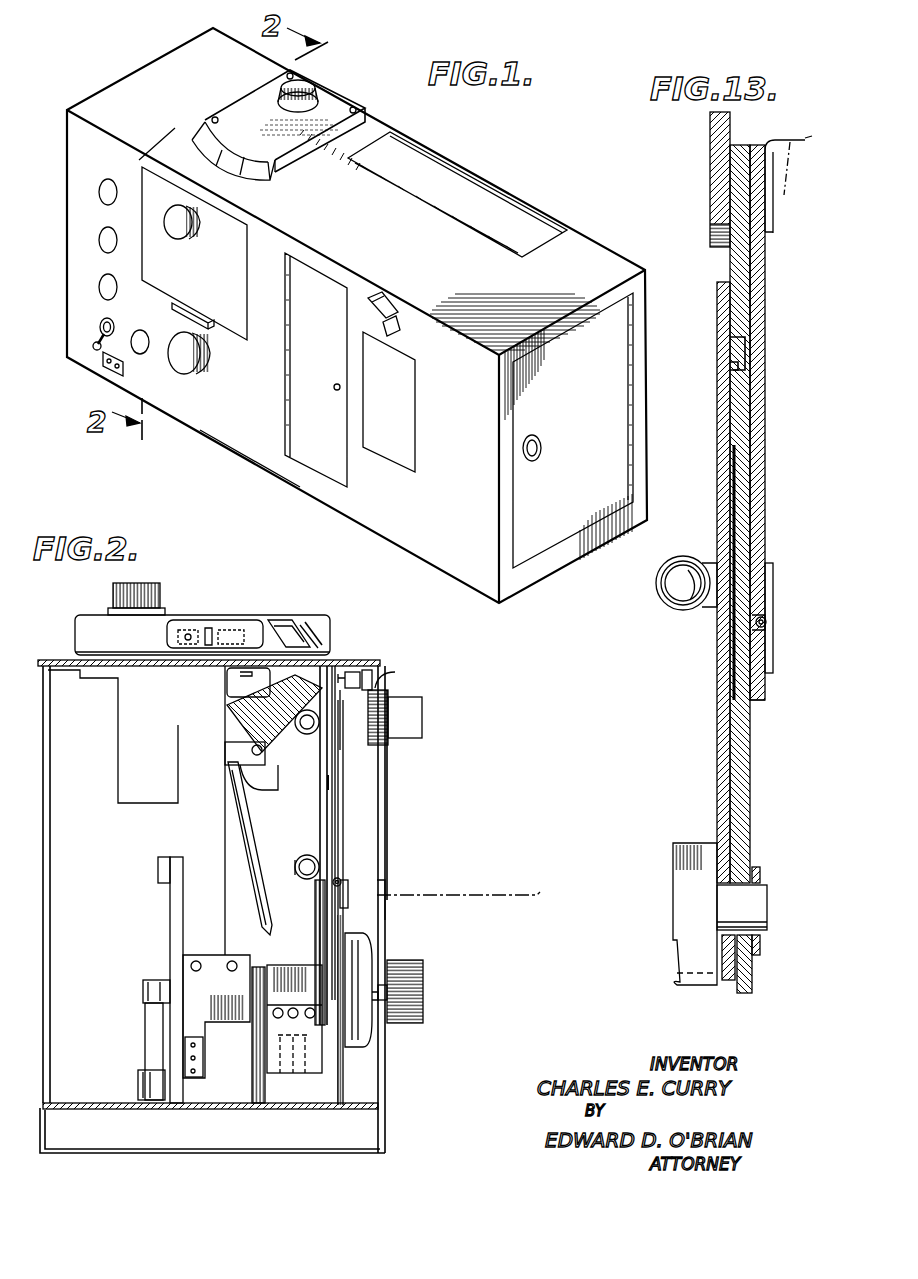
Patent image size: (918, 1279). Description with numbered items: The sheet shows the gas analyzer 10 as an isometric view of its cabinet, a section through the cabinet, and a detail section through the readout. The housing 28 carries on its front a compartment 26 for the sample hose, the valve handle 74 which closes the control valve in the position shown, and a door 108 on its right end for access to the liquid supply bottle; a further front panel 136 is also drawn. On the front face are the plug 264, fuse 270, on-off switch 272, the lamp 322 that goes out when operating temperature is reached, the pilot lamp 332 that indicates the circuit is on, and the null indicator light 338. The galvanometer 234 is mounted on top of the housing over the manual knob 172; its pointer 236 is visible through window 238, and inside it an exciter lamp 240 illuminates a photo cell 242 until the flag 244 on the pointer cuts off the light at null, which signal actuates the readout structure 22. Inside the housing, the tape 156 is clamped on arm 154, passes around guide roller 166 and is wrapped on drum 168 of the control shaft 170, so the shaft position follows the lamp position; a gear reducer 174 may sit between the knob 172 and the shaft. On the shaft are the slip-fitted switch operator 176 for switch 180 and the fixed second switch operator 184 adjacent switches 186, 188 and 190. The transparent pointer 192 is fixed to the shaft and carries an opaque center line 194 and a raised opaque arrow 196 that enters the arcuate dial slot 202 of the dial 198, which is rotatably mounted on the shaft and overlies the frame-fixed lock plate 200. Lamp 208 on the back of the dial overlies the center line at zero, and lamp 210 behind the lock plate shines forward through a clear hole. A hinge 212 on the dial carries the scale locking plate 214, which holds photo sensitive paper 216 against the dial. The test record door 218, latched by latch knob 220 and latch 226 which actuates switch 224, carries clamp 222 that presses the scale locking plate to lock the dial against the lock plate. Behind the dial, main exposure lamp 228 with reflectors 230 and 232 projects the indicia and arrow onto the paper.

In FIG. 1, the gas analyzer 10 is at (505, 190).
In FIG. 2, the readout structure 22 is at (345, 818).
In FIG. 1, the compartment 26 is at (303, 458).
In FIG. 1, the housing 28 is at (400, 521).
In FIG. 2, the housing 28 is at (388, 1082).
In FIG. 1, the valve handle 74 is at (400, 348).
In FIG. 1, the door 108 is at (533, 570).
In FIG. 1, the front access panel 136 is at (390, 448).
In FIG. 2, the arm 154 is at (158, 870).
In FIG. 2, the tape 156 is at (150, 1037).
In FIG. 2, the guide roller 166 is at (143, 1082).
In FIG. 2, the drum 168 is at (143, 992).
In FIG. 13, the control shaft 170 is at (745, 898).
In FIG. 2, the control shaft 170 is at (376, 1000).
In FIG. 1, the manual knob 172 is at (200, 370).
In FIG. 2, the manual knob 172 is at (418, 978).
In FIG. 2, the gear reducer 174 is at (352, 955).
In FIG. 2, the switch operator 176 is at (216, 968).
In FIG. 2, the switch 180 is at (203, 1055).
In FIG. 13, the second switch operator 184 is at (680, 965).
In FIG. 2, the second switch operator 184 is at (312, 1052).
In FIG. 2, the switch 186 is at (262, 1095).
In FIG. 2, the switch 188 is at (284, 1075).
In FIG. 2, the switch 190 is at (302, 1075).
In FIG. 13, the pointer 192 is at (722, 685).
In FIG. 2, the pointer 192 is at (344, 850).
In FIG. 13, the center line 194 is at (733, 610).
In FIG. 13, the arrow 196 is at (742, 348).
In FIG. 2, the arrow 196 is at (330, 778).
In FIG. 13, the dial 198 is at (745, 745).
In FIG. 2, the dial 198 is at (324, 803).
In FIG. 13, the lock plate 200 is at (715, 182).
In FIG. 13, the dial slot 202 is at (745, 364).
In FIG. 13, the lamp 208 is at (670, 601).
In FIG. 2, the lamp 208 is at (305, 858).
In FIG. 2, the lamp 210 is at (298, 712).
In FIG. 13, the hinge 212 is at (768, 638).
In FIG. 2, the hinge 212 is at (346, 886).
In FIG. 13, the scale locking plate 214 is at (757, 460).
In FIG. 2, the scale locking plate 214 is at (336, 830).
In FIG. 13, the photo sensitive paper 216 is at (757, 420).
In FIG. 1, the test record door 218 is at (200, 292).
In FIG. 2, the test record door 218 is at (389, 780).
In FIG. 2, the latch knob 220 is at (408, 710).
In FIG. 1, the clamp 222 is at (180, 230).
In FIG. 13, the clamp 222 is at (793, 184).
In FIG. 2, the clamp 222 is at (344, 740).
In FIG. 2, the switch 224 is at (355, 675).
In FIG. 2, the latch 226 is at (372, 682).
In FIG. 2, the main exposure lamp 228 is at (250, 792).
In FIG. 2, the reflector 230 is at (300, 735).
In FIG. 2, the reflector 232 is at (252, 840).
In FIG. 1, the galvanometer 234 is at (333, 106).
In FIG. 2, the galvanometer 234 is at (85, 624).
In FIG. 1, the pointer 236 is at (233, 155).
In FIG. 2, the pointer 236 is at (302, 630).
In FIG. 1, the window 238 is at (212, 140).
In FIG. 2, the window 238 is at (316, 650).
In FIG. 2, the exciter lamp 240 is at (190, 630).
In FIG. 2, the photo cell 242 is at (258, 622).
In FIG. 2, the flag 244 is at (232, 630).
In FIG. 1, the plug 264 is at (105, 362).
In FIG. 1, the fuse 270 is at (137, 355).
In FIG. 1, the on-off switch 272 is at (98, 337).
In FIG. 1, the lamp 322 is at (100, 242).
In FIG. 1, the pilot lamp 332 is at (100, 288).
In FIG. 1, the null indicator light 338 is at (100, 194).